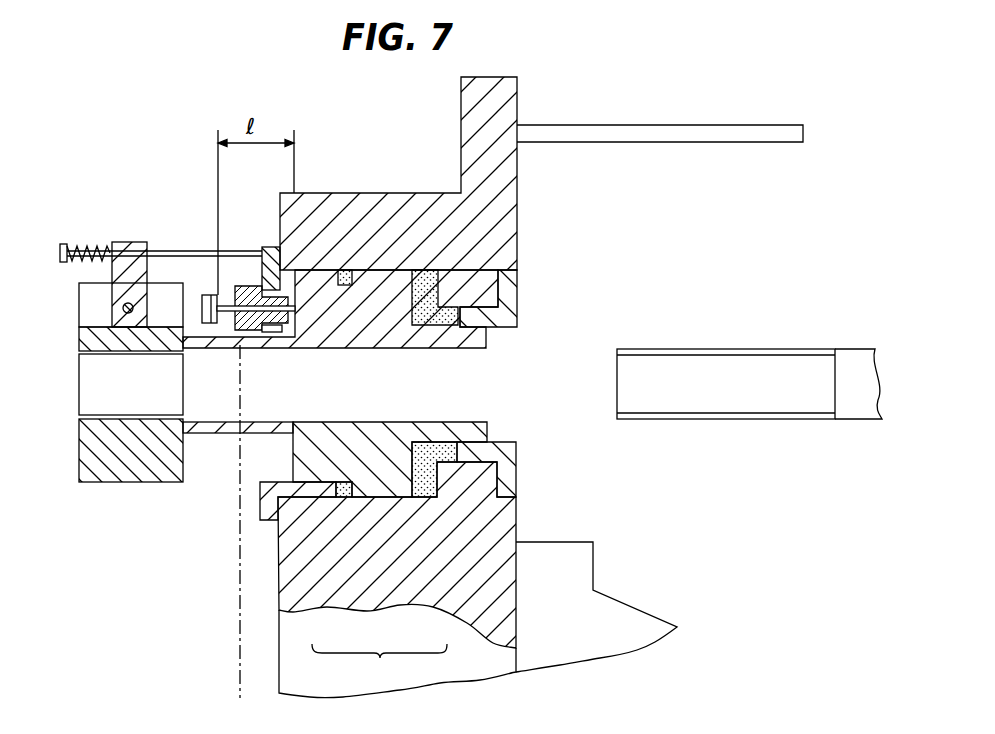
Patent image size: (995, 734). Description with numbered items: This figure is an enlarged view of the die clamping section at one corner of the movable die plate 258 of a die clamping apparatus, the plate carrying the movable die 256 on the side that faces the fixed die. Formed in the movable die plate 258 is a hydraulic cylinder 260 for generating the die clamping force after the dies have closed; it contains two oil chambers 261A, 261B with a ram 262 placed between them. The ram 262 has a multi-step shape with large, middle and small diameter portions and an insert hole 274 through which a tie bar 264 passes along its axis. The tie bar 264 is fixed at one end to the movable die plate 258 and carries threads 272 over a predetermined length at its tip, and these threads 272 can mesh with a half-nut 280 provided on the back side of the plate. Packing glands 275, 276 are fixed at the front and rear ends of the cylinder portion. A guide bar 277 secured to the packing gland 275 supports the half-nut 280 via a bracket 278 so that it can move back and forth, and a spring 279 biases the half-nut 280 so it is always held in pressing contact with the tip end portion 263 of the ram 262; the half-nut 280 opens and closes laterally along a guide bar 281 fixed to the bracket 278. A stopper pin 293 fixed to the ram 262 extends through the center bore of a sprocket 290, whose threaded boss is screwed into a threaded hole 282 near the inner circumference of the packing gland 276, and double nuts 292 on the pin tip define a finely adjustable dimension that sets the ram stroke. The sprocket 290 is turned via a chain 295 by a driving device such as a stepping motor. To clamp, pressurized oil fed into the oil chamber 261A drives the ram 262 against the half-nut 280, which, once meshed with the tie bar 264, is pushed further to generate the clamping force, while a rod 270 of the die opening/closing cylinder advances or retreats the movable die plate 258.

The movable die 256 is at (655, 625).
The movable die plate 258 is at (503, 668).
The hydraulic cylinder 260 is at (379, 665).
The oil chamber 261A is at (422, 497).
The oil chamber 261B is at (343, 497).
The ram 262 is at (345, 450).
The tip end portion 263 is at (185, 432).
The tie bar 264 is at (860, 357).
The rod 270 is at (722, 125).
The threads 272 is at (716, 349).
The insert hole 274 is at (488, 349).
The packing gland 275 is at (262, 508).
The packing gland 276 is at (516, 469).
The guide bar 277 is at (62, 246).
The bracket 278 is at (112, 285).
The spring 279 is at (98, 248).
The half-nut 280 is at (113, 481).
The guide bar 281 is at (122, 312).
The threaded hole 282 is at (272, 333).
The sprocket 290 is at (250, 287).
The double nuts 292 is at (217, 295).
The stopper pin 293 is at (200, 305).
The chain 295 is at (238, 626).